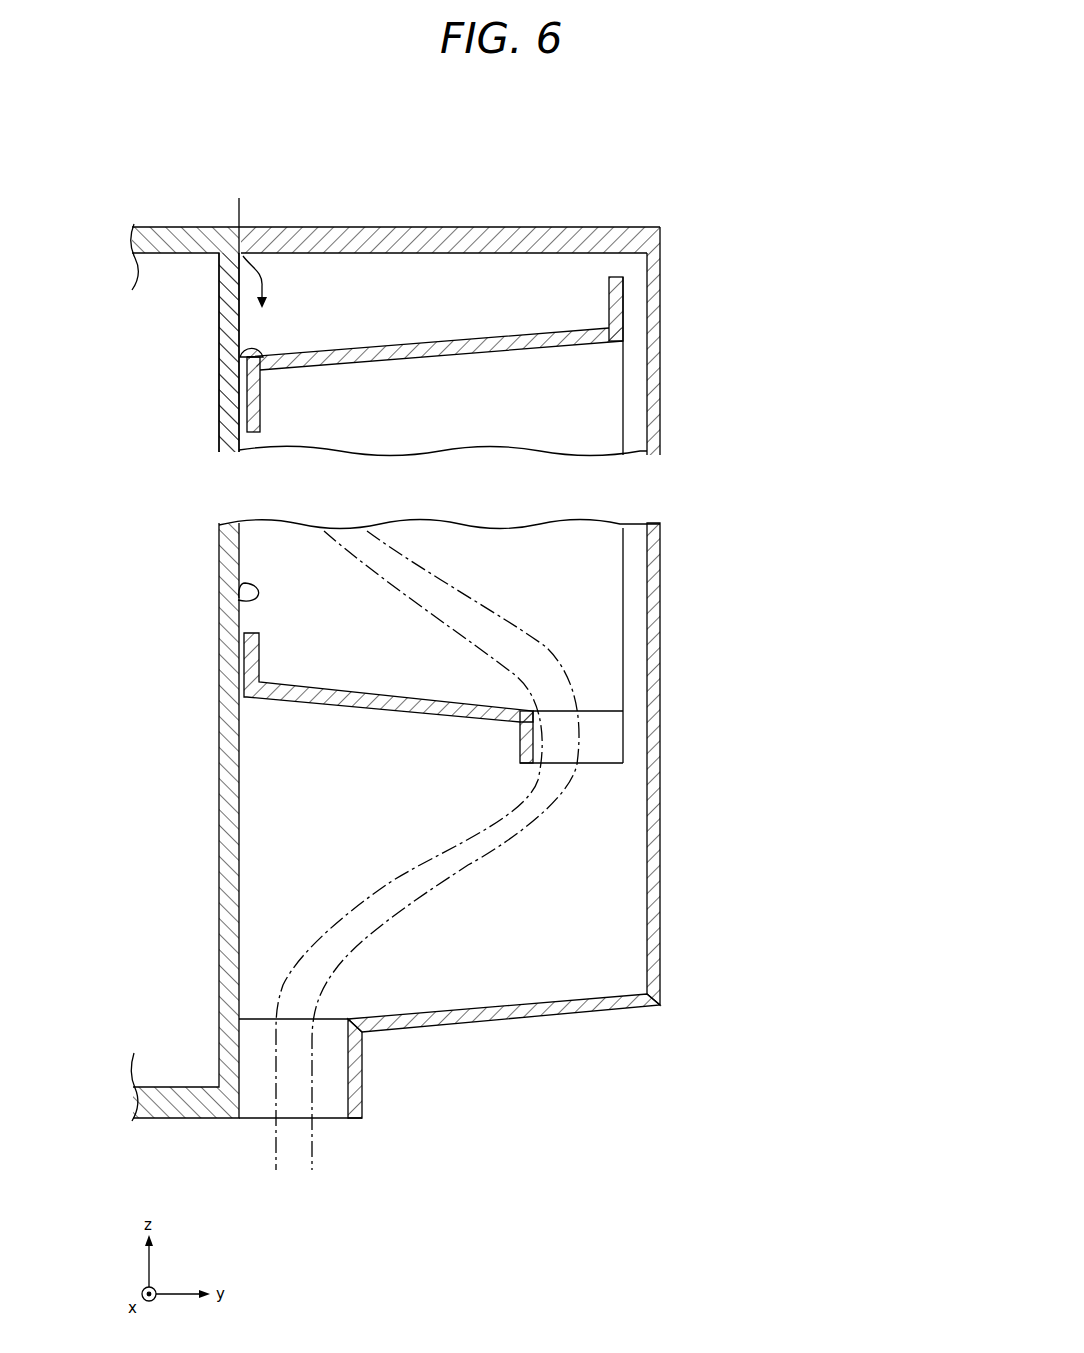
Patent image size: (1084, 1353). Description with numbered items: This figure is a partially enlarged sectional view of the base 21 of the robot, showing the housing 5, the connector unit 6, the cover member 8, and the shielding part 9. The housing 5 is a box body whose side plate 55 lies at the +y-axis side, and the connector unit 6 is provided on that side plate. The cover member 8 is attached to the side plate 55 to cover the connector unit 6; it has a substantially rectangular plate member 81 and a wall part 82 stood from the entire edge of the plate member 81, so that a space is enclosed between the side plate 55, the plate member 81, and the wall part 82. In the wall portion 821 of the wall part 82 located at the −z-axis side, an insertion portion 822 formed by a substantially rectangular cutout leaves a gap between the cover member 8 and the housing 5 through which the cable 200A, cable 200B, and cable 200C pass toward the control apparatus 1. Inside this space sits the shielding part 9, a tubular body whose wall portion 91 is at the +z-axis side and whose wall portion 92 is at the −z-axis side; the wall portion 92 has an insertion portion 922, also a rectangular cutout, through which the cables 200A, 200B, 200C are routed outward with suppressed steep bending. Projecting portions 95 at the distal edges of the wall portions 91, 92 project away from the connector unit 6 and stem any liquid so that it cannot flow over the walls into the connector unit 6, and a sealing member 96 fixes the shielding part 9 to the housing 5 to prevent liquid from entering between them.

The control apparatus 1 is at (672, 147).
The housing 5 is at (175, 298).
The base 21 is at (192, 228).
The side plate 55 is at (229, 313).
The connector unit 6 is at (238, 600).
The cover member 8 is at (449, 306).
The plate member 81 is at (655, 866).
The wall part 82 is at (374, 245).
The wall portion 821 is at (574, 1012).
The insertion portion 822 is at (337, 1077).
The shielding part 9 is at (344, 706).
The wall portion 91 is at (490, 333).
The wall portion 92 is at (357, 707).
The insertion portion 922 is at (602, 738).
The projecting portion 95 is at (623, 300).
The sealing member 96 is at (241, 410).
The cable 200A is at (580, 850).
The cable 200B is at (580, 850).
The cable 200C is at (556, 665).